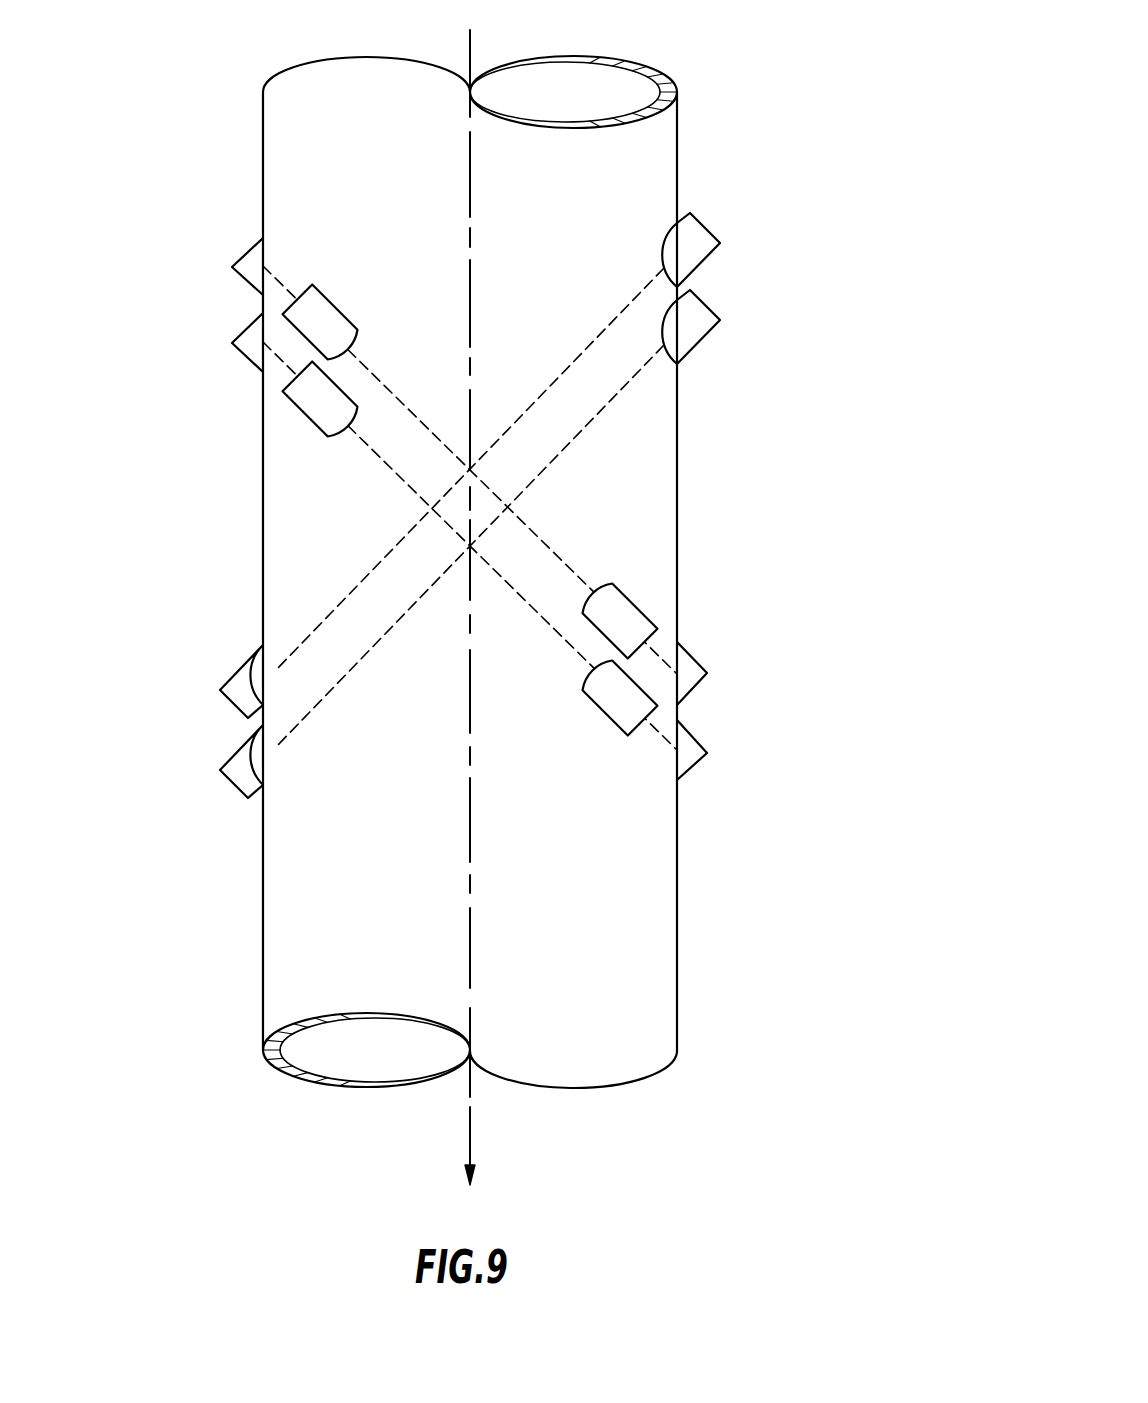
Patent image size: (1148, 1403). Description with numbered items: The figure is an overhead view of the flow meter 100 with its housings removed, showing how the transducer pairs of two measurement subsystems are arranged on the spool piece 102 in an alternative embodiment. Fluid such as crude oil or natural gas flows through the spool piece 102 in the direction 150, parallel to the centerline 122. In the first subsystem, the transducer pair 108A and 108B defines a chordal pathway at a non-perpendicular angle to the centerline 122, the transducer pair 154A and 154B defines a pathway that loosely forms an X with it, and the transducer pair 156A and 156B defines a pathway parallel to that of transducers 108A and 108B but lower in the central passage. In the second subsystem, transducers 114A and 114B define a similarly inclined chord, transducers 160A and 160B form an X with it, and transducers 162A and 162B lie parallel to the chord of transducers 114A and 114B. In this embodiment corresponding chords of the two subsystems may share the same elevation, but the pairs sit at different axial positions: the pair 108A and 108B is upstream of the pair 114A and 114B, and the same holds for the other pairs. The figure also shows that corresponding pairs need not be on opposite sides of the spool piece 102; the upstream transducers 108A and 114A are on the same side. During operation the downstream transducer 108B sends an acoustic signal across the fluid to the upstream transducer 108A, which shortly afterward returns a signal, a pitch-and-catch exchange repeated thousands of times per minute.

The flow meter 100 is at (843, 73).
The spool piece 102 is at (678, 111).
The centerline 122 is at (471, 52).
The direction 150 is at (473, 1148).
The upstream transducer 108A is at (328, 298).
The downstream transducer 108B is at (638, 598).
The upstream transducer 114A is at (297, 413).
The transducer 114B is at (612, 720).
The transducer 154A is at (707, 262).
The transducer 154B is at (235, 673).
The transducer 156A is at (243, 255).
The transducer 156B is at (697, 652).
The transducer 160A is at (718, 308).
The transducer 160B is at (235, 748).
The transducer 162A is at (243, 330).
The transducer 162B is at (707, 763).